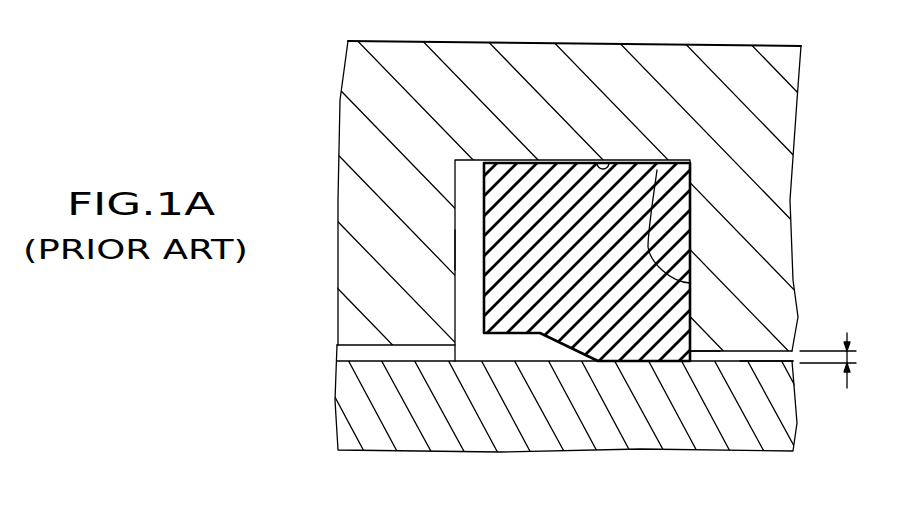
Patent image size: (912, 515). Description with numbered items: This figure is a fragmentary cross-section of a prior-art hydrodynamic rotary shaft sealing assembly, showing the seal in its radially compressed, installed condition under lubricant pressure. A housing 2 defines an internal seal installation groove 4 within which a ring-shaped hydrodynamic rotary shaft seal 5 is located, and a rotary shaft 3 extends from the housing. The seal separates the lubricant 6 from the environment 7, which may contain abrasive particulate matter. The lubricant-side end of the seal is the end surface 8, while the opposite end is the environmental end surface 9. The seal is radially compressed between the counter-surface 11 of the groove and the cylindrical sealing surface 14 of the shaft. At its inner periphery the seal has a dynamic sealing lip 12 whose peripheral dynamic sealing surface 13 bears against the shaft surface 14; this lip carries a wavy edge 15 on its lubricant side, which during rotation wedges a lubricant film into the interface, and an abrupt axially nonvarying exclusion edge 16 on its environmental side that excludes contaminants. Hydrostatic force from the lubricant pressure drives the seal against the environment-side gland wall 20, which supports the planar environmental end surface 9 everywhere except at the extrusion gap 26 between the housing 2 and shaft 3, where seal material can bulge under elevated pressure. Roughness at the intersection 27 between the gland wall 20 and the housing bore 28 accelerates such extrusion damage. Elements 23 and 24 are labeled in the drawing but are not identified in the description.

The housing 2 is at (373, 135).
The rotary shaft 3 is at (372, 428).
The seal installation groove 4 is at (470, 298).
The hydrodynamic rotary shaft seal 5 is at (690, 280).
The lubricant 6 is at (528, 352).
The environment 7 is at (763, 355).
The lubricant-side end surface 8 is at (470, 249).
The environmental end surface 9 is at (690, 227).
The counter-surface of the seal groove 11 is at (592, 160).
The dynamic sealing lip 12 is at (645, 345).
The peripheral dynamic sealing surface 13 is at (615, 352).
The cylindrical sealing surface of the shaft 14 is at (380, 360).
The wavy edge 15 is at (567, 350).
The abrupt axially nonvarying exclusion edge 16 is at (690, 363).
The environment-side gland wall 20 is at (658, 165).
The left edge of plug 23 is at (485, 165).
The curved boundary 24 is at (660, 170).
The extrusion gap 26 is at (828, 346).
The intersection between gland wall and housing bore 27 is at (690, 350).
The housing bore 28 is at (728, 352).